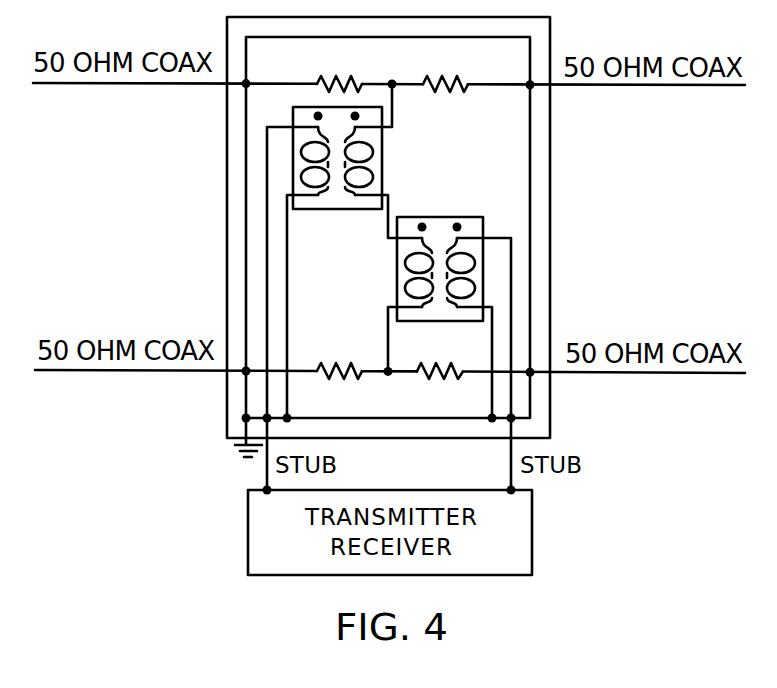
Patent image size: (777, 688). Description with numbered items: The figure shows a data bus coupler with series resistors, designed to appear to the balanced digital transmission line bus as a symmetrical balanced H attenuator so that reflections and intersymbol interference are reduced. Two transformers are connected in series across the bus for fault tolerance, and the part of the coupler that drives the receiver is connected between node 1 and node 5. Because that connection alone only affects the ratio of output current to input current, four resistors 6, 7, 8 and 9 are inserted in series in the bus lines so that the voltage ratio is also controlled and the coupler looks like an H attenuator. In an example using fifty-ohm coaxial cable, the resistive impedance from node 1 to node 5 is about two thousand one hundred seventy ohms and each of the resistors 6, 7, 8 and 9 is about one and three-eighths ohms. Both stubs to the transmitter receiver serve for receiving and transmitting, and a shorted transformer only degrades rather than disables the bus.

The node 1 is at (381, 66).
The node 5 is at (398, 388).
The resistor 6 is at (339, 67).
The resistor 7 is at (445, 67).
The resistor 8 is at (339, 351).
The resistor 9 is at (440, 351).